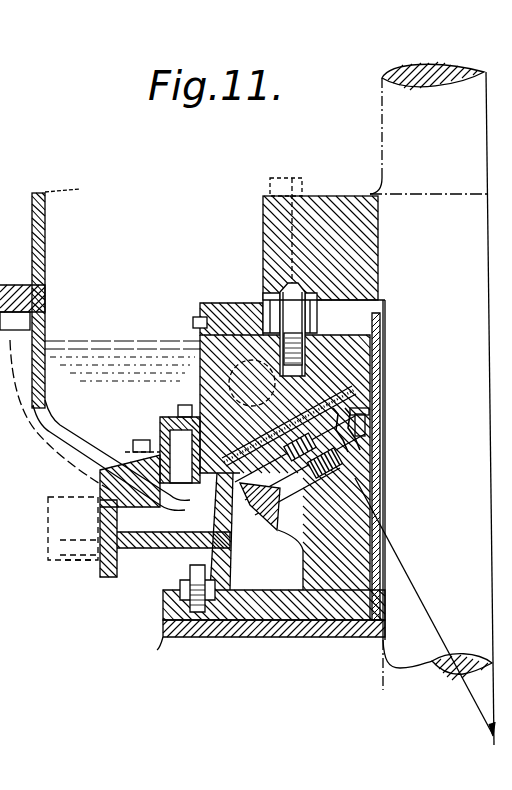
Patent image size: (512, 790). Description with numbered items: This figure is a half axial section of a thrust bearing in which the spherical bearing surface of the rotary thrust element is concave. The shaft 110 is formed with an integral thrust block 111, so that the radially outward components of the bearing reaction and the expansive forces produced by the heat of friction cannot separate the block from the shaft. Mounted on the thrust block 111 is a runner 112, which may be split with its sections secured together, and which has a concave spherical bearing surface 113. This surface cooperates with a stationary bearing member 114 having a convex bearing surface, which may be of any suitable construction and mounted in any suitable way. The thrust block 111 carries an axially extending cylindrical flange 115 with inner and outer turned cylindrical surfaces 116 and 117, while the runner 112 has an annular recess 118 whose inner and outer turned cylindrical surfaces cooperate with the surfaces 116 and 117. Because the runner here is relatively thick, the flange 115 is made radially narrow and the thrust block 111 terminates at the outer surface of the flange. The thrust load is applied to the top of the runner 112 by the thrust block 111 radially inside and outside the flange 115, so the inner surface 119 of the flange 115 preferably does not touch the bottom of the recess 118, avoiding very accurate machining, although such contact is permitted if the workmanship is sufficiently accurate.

The shaft 110 is at (393, 118).
The thrust block 111 is at (327, 206).
The runner 112 is at (250, 330).
The concave spherical bearing surface 113 is at (370, 370).
The stationary bearing member 114 is at (338, 436).
The cylindrical flange 115 is at (303, 299).
The inner turned cylindrical surface 116 is at (312, 304).
The outer turned cylindrical surface 117 is at (277, 313).
The annular recess 118 is at (488, 300).
The inner surface of flange 119 is at (265, 330).